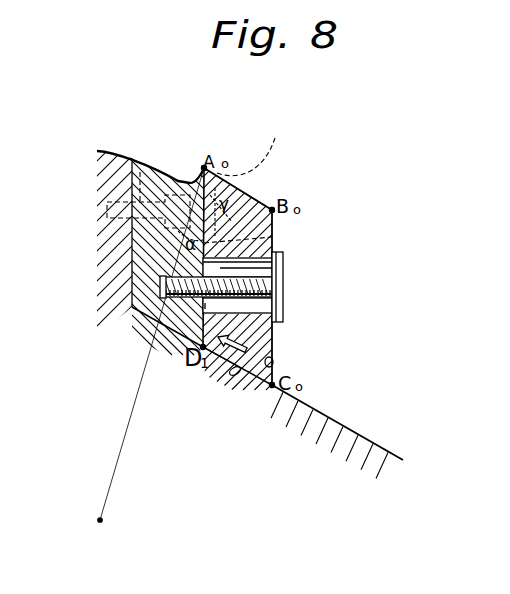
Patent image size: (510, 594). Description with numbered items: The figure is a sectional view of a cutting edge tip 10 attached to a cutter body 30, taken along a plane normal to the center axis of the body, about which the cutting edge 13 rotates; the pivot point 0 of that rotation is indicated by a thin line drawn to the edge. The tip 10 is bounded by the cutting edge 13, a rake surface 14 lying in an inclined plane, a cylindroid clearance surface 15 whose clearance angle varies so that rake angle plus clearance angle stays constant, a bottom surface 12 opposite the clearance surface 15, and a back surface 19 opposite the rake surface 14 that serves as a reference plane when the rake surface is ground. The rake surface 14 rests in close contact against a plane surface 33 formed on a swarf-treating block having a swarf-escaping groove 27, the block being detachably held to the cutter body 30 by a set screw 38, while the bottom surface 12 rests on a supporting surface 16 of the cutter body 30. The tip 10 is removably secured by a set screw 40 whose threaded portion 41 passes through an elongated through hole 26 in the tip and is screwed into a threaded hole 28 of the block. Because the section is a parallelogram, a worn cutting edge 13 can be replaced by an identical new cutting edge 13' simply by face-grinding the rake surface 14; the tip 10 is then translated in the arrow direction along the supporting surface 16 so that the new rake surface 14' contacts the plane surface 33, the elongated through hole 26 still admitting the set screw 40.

The pivot point 0 is at (144, 362).
The tip 10 is at (253, 198).
The bottom surface 12 is at (272, 340).
The cutting edge 13 is at (200, 141).
The new cutting edge 13' is at (261, 143).
The rake surface 14 is at (172, 293).
The new rake surface 14' is at (279, 238).
The clearance surface 15 is at (273, 219).
The supporting surface 16 is at (226, 352).
The back surface 19 is at (273, 352).
The elongated through hole 26 is at (273, 263).
The swarf-escaping groove 27 is at (180, 181).
The threaded hole 28 is at (160, 286).
The cutter body 30 is at (372, 442).
The plane surface 33 is at (202, 311).
The set screw 38 is at (140, 172).
The set screw 40 is at (284, 306).
The threaded portion 41 is at (258, 279).